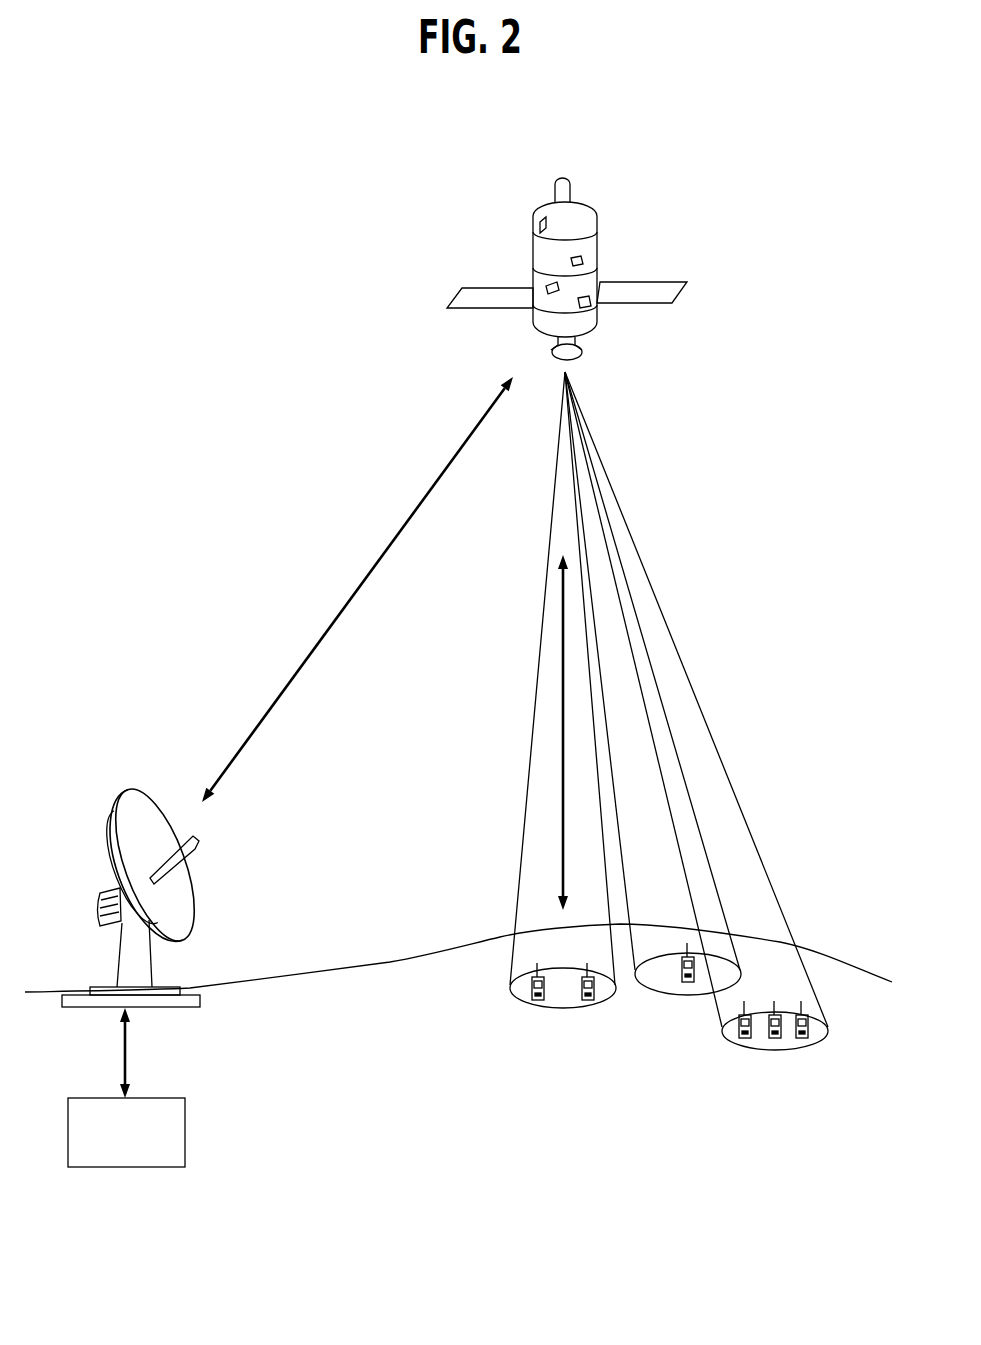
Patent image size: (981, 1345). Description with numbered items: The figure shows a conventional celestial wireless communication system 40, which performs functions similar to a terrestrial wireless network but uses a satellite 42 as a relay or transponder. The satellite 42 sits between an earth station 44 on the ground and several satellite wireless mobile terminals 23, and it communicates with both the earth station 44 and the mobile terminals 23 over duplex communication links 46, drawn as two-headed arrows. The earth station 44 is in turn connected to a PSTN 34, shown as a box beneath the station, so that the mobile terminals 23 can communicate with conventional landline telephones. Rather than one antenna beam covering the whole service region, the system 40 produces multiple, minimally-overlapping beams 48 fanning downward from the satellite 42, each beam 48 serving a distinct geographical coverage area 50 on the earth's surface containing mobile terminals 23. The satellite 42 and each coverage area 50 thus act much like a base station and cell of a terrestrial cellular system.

The celestial wireless communication system 40 is at (278, 360).
The satellite 42 is at (626, 259).
The earth station 44 is at (92, 1008).
The duplex communication links 46 is at (378, 553).
The beams 48 is at (518, 875).
The coverage area 50 is at (513, 998).
The satellite wireless mobile terminals 23 is at (542, 1000).
The PSTN 34 is at (185, 1108).